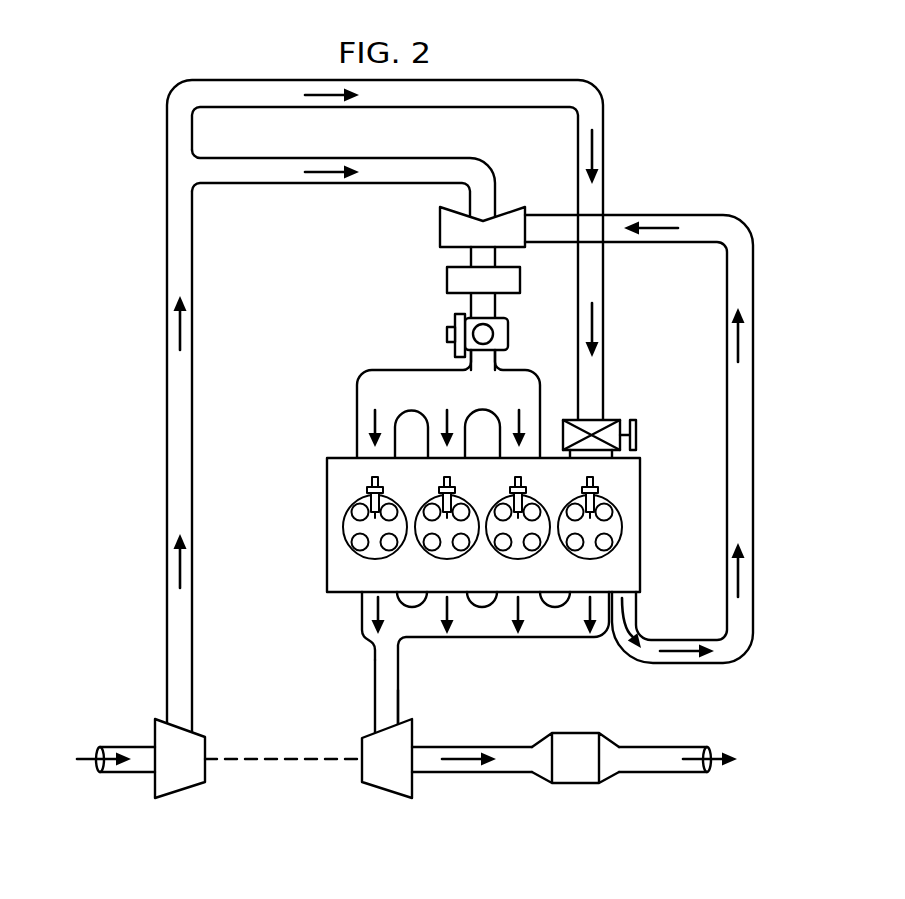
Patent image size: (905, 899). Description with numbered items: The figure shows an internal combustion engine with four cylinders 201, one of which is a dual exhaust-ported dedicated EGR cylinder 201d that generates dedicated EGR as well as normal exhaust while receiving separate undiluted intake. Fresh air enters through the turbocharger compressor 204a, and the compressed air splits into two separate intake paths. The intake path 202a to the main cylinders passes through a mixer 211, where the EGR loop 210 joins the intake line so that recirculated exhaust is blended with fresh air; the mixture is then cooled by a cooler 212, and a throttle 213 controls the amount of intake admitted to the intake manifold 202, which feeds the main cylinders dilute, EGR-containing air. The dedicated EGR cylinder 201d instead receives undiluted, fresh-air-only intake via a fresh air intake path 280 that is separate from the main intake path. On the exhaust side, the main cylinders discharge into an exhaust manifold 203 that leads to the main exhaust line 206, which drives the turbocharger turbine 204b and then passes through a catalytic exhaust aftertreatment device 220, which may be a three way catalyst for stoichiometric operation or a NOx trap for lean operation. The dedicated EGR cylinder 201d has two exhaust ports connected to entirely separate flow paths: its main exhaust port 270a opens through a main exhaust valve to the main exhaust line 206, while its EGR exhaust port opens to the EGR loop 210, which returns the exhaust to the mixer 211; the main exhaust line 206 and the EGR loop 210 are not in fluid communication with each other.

The fresh air intake path 280 is at (534, 80).
The intake path 202a is at (276, 184).
The mixer 211 is at (440, 222).
The cooler 212 is at (447, 280).
The throttle 213 is at (447, 335).
The intake manifold 202 is at (360, 400).
The cylinders 201 is at (345, 528).
The dedicated EGR cylinder 201d is at (615, 528).
The main exhaust port 270a is at (363, 603).
The exhaust manifold 203 is at (487, 632).
The main exhaust line 206 is at (375, 690).
The compressor 204a is at (180, 793).
The turbine 204b is at (387, 793).
The catalytic exhaust aftertreatment device 220 is at (575, 785).
The EGR loop 210 is at (754, 272).